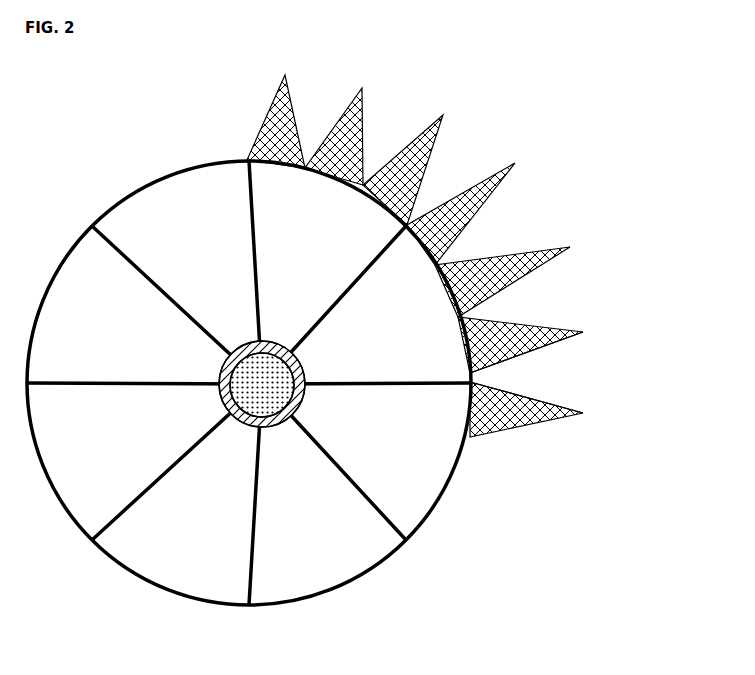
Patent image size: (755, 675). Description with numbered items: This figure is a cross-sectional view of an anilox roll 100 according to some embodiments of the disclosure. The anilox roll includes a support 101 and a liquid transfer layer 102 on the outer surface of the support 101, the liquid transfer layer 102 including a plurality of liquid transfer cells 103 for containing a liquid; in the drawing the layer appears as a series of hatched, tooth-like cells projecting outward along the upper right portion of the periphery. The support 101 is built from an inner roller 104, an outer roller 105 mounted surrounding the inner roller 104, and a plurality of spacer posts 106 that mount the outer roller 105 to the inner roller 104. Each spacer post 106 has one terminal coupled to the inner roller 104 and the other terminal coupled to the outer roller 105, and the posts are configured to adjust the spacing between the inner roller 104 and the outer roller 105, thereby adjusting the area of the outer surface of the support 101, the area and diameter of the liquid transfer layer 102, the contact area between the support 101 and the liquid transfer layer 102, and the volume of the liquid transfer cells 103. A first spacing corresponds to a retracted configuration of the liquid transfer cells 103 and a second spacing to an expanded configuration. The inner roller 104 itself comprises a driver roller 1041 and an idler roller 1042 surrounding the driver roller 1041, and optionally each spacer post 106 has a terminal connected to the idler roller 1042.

The cutting wheel 100 is at (355, 365).
The support 101 is at (355, 393).
The liquid transfer layer 102 is at (537, 427).
The liquid transfer cells 103 is at (472, 380).
The inner roller 104 is at (419, 445).
The driver roller 1041 is at (255, 383).
The idler roller 1042 is at (273, 400).
The outer roller 105 is at (406, 537).
The spacer posts 106 is at (253, 563).